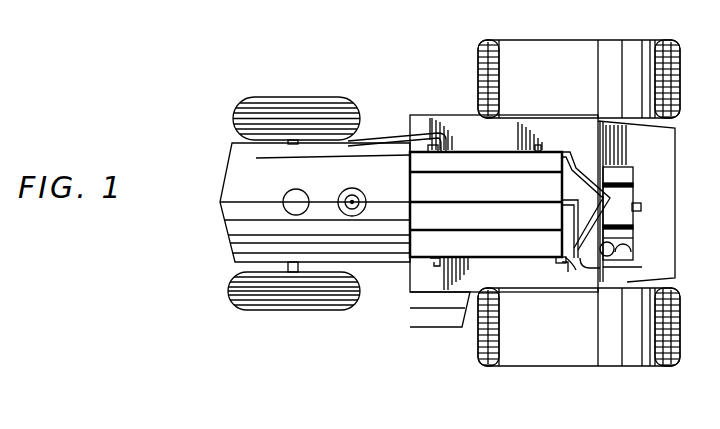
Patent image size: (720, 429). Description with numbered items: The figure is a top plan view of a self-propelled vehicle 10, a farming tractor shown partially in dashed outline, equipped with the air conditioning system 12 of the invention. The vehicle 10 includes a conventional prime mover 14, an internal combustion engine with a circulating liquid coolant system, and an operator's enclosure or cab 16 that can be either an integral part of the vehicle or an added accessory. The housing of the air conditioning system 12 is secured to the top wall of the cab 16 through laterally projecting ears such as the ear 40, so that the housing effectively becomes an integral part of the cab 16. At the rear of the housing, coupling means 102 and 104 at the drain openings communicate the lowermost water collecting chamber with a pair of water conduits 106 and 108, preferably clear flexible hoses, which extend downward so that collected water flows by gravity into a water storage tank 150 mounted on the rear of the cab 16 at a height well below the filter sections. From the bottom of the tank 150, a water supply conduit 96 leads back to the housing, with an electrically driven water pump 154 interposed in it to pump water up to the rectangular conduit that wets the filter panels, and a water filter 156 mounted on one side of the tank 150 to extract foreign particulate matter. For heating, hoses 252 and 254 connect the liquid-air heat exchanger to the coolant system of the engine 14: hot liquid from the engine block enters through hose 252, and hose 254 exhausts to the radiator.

The self-propelled vehicle 10 is at (300, 93).
The air conditioning system 12 is at (504, 146).
The prime mover 14 is at (278, 171).
The operator's enclosure or cab 16 is at (425, 115).
The laterally projecting ear 40 is at (438, 263).
The water supply conduit 96 is at (587, 270).
The coupling means 102 is at (563, 262).
The coupling means 104 is at (563, 150).
The water conduit 106 is at (567, 264).
The water conduit 108 is at (568, 151).
The water storage tank 150 is at (627, 270).
The water pump 154 is at (643, 205).
The water filter 156 is at (618, 275).
The hose 252 is at (402, 138).
The hose 254 is at (373, 138).